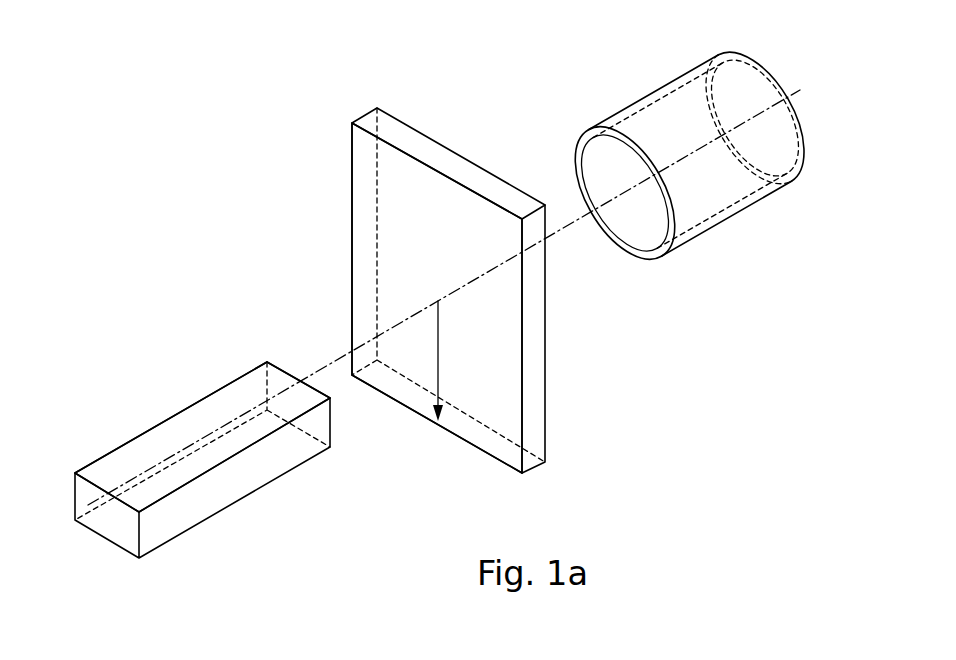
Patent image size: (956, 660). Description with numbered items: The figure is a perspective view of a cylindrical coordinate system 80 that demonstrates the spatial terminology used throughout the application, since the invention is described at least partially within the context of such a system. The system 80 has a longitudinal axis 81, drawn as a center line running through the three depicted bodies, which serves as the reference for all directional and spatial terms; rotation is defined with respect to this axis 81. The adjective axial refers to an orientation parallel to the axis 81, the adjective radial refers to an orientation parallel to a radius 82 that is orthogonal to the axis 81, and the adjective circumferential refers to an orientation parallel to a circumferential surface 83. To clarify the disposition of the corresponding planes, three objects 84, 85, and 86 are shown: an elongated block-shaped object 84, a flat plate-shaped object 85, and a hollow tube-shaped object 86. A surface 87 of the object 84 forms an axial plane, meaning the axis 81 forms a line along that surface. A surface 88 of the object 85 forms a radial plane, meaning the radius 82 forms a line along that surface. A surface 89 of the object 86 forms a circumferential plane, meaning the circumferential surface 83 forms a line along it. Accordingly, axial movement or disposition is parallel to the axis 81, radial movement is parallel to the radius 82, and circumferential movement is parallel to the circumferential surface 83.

The cylindrical coordinate system 80 is at (296, 156).
The longitudinal axis 81 is at (793, 93).
The radius 82 is at (438, 355).
The circumferential surface 83 is at (575, 152).
The object 84 is at (167, 543).
The object 85 is at (562, 467).
The object 86 is at (720, 234).
The surface 87 is at (162, 438).
The surface 88 is at (370, 247).
The surface 89 is at (655, 90).